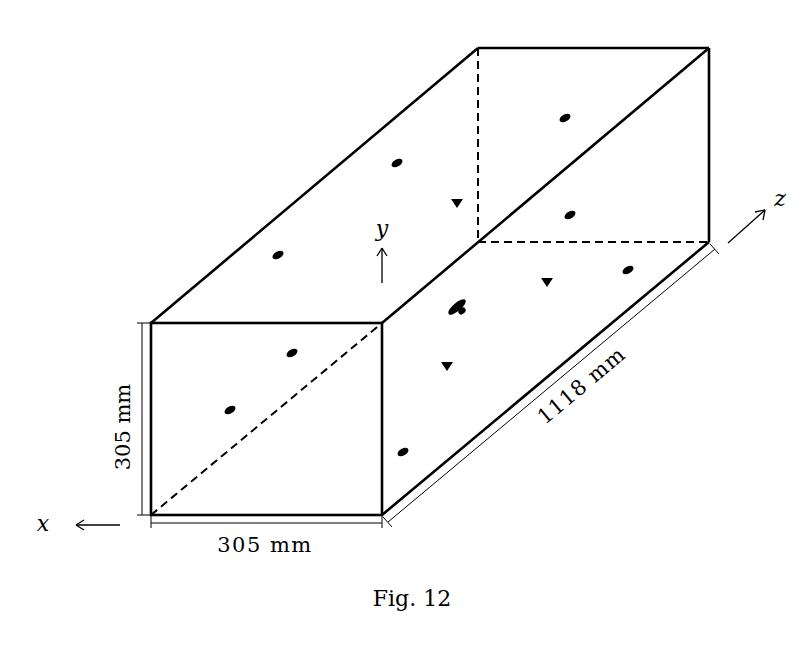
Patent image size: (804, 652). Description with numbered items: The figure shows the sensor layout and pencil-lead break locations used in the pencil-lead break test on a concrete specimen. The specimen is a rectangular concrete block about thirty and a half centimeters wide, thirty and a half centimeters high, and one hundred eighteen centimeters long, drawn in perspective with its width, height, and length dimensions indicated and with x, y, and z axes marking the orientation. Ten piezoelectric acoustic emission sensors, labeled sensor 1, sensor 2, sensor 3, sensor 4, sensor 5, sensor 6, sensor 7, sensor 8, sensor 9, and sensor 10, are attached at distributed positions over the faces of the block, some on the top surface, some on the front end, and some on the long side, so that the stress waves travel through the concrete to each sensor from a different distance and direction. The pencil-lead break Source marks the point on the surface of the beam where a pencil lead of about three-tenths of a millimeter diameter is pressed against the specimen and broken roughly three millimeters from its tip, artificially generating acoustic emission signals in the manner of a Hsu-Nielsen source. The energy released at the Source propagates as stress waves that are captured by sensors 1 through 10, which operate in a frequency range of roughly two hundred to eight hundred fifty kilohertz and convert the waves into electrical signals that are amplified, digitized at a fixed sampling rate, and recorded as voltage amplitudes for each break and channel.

The piezoelectric AE sensor 1 is at (578, 103).
The piezoelectric AE sensor 2 is at (295, 239).
The piezoelectric AE sensor 3 is at (487, 308).
The piezoelectric AE sensor 4 is at (420, 436).
The piezoelectric AE sensor 5 is at (627, 251).
The piezoelectric AE sensor 6 is at (568, 196).
The piezoelectric AE sensor 7 is at (461, 287).
The piezoelectric AE sensor 8 is at (396, 143).
The piezoelectric AE sensor 9 is at (290, 335).
The piezoelectric AE sensor 10 is at (230, 429).
The pencil-lead break source Source is at (545, 258).